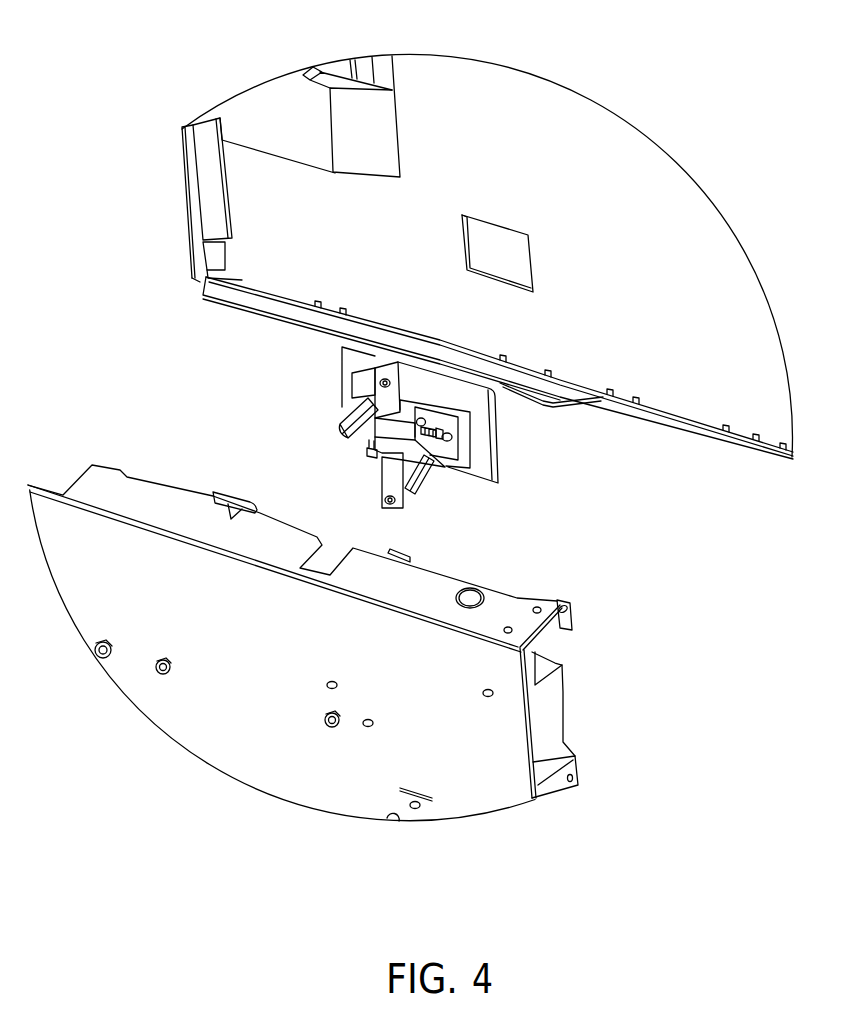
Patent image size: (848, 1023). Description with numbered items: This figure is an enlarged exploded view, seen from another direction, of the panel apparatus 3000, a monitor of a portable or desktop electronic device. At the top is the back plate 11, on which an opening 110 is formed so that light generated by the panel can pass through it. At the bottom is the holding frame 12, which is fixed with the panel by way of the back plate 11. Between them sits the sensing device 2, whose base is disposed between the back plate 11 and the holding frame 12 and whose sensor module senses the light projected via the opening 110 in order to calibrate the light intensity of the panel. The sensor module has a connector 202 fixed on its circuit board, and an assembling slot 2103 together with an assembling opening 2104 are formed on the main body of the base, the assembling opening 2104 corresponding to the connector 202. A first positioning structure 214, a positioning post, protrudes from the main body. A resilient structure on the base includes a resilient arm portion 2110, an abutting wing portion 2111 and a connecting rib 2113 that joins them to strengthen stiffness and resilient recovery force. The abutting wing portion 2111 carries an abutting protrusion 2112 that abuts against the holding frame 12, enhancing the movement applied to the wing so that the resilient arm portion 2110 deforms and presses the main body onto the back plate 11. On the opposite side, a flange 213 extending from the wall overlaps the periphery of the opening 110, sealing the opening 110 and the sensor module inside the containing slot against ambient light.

The panel apparatus 3000 is at (678, 68).
The back plate 11 is at (697, 215).
The opening 110 is at (498, 244).
The holding frame 12 is at (488, 803).
The sensing device 2 is at (272, 403).
The connector 202 is at (442, 455).
The flange 213 is at (483, 453).
The first positioning structure 214 is at (348, 421).
The assembling slot 2103 is at (423, 418).
The assembling opening 2104 is at (452, 470).
The resilient arm portion 2110 is at (372, 448).
The abutting wing portion 2111 is at (386, 393).
The abutting protrusion 2112 is at (382, 377).
The connecting rib 2113 is at (398, 472).